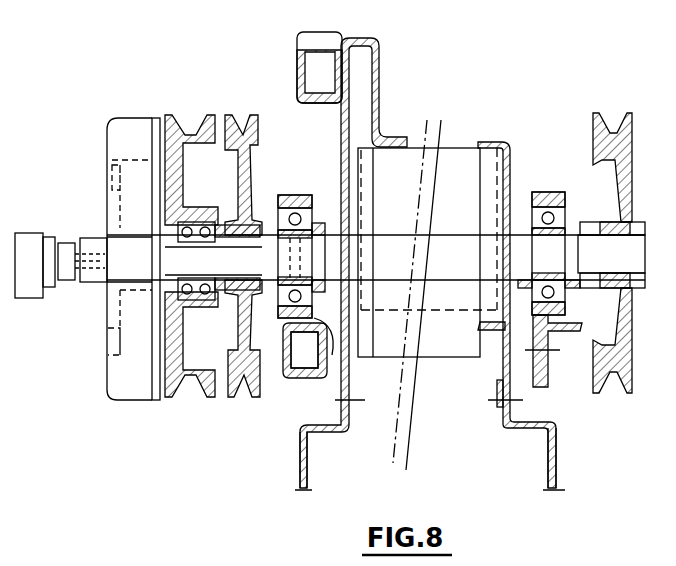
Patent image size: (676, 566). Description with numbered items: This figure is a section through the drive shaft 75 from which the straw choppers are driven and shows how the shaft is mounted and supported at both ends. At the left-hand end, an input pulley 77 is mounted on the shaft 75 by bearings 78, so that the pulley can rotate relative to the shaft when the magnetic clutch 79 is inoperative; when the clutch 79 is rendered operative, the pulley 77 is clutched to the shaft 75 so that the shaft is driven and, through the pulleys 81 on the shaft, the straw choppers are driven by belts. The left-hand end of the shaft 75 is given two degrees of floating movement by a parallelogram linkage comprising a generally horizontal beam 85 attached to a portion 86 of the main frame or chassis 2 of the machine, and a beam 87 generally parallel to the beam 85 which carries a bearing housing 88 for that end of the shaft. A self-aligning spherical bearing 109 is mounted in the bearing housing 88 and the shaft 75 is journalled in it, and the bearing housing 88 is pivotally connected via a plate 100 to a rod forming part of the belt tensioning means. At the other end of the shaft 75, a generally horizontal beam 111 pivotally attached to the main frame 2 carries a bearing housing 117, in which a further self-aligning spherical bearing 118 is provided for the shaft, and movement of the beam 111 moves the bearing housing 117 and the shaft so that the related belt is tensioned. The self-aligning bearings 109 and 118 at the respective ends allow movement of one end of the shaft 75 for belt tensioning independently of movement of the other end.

The main frame or chassis 2 is at (308, 462).
The shaft 75 is at (447, 242).
The input pulley 77 is at (196, 114).
The bearings 78 is at (206, 244).
The magnetic clutch 79 is at (132, 128).
The pulleys 81 is at (246, 114).
The beam 85 is at (298, 78).
The portion of the main frame 86 is at (378, 60).
The beam 87 is at (302, 378).
The bearing housing 88 is at (279, 193).
The plate 100 is at (335, 355).
The self-aligning bearing 109 is at (305, 195).
The beam 111 is at (550, 380).
The bearing housing 117 is at (533, 192).
The self-aligning bearing 118 is at (565, 195).